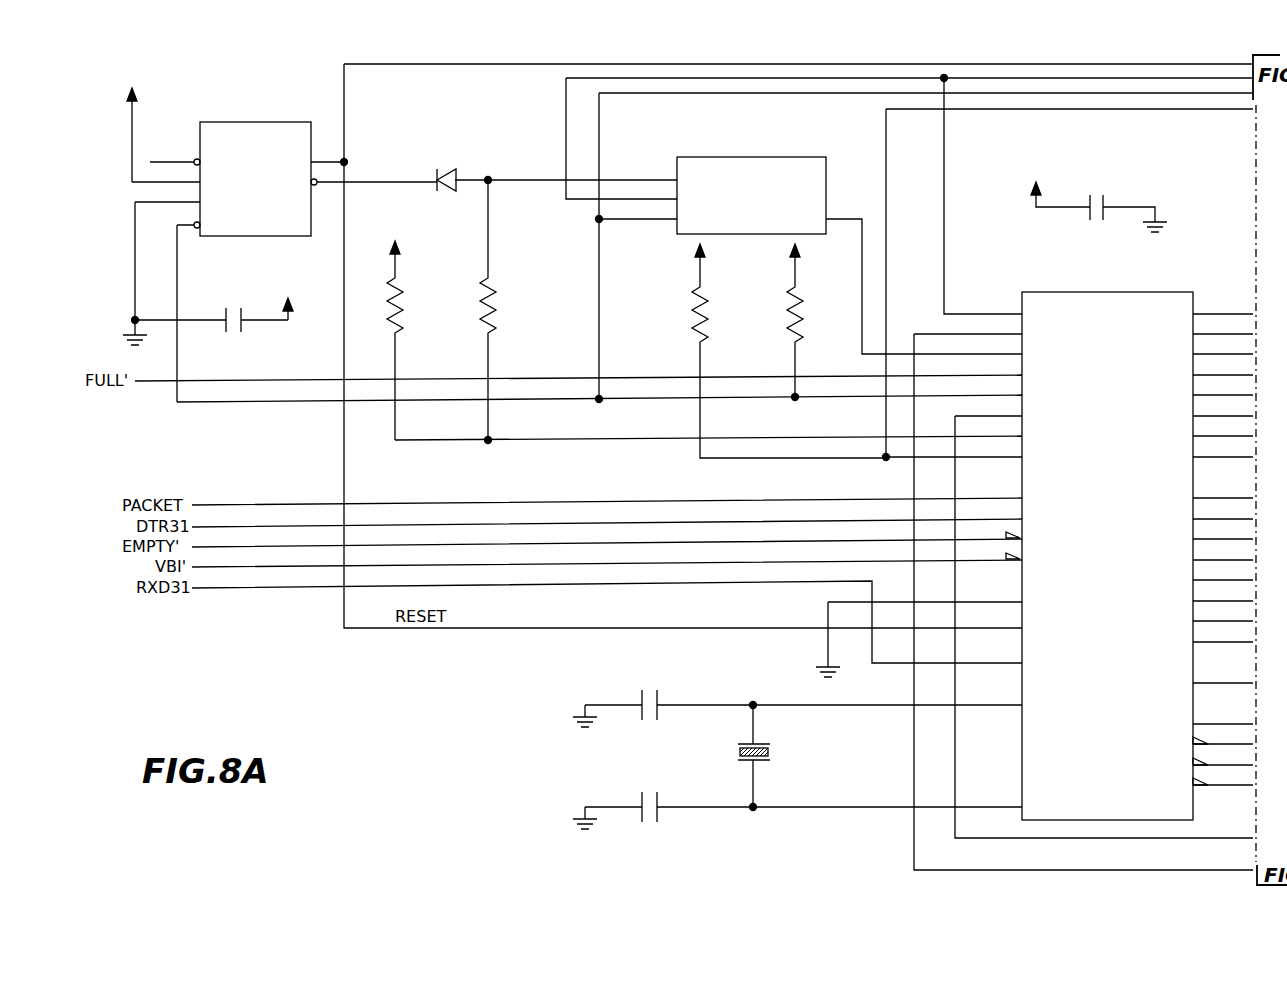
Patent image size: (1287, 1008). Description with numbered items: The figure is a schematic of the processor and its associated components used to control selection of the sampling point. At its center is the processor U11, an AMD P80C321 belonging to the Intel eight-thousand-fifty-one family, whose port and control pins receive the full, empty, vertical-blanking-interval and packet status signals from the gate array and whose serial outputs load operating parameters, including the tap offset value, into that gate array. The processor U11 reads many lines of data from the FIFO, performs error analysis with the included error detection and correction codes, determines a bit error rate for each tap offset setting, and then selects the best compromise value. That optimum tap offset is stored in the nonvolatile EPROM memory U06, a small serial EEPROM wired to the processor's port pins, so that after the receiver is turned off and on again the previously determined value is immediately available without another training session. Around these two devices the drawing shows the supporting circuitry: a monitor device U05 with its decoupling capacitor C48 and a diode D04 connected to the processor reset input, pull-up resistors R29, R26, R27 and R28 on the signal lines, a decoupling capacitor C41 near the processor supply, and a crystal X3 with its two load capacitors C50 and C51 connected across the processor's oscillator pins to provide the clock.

The DS1232 monitor IC U05 is at (282, 244).
The capacitor 0.1uF C48 is at (208, 301).
The diode 1N4148 D04 is at (546, 157).
The resistor 6.2K R29 is at (700, 340).
The resistor 2.2K R26 is at (507, 312).
The resistor 6.2K R27 is at (852, 351).
The resistor 6.2K R28 is at (811, 322).
The nonvolatile EPROM memory U06 is at (810, 237).
The capacitor 0.1uF C41 is at (1099, 189).
The processor U11 is at (1083, 560).
The capacitor 22pF C50 is at (663, 688).
The capacitor 22pF C51 is at (663, 790).
The crystal 11.0592MHz X3 is at (880, 756).